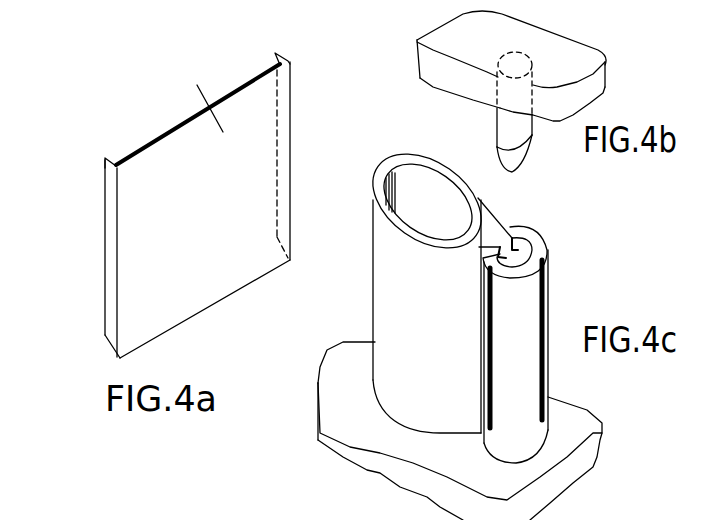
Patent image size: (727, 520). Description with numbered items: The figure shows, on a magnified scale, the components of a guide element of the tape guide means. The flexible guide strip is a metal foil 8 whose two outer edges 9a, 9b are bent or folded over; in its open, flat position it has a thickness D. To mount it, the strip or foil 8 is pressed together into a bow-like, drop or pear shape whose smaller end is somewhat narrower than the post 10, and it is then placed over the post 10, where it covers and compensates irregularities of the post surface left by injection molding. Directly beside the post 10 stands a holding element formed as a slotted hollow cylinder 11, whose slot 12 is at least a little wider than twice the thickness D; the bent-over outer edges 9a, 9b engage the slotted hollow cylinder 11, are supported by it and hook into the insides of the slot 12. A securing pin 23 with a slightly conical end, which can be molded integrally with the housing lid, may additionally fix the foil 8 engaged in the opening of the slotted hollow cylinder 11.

In FIG. 4A, the metal foil 8 is at (207, 290).
In FIG. 4A, the bent-over outer edge 9a is at (107, 170).
In FIG. 4C, the bent-over outer edge 9a is at (501, 262).
In FIG. 4A, the bent-over outer edge 9b is at (276, 53).
In FIG. 4C, the bent-over outer edge 9b is at (522, 240).
In FIG. 4A, the thickness D is at (210, 101).
In FIG. 4B, the securing pin 23 is at (500, 122).
In FIG. 4C, the post 10 is at (387, 173).
In FIG. 4C, the slotted hollow cylinder 11 is at (537, 235).
In FIG. 4C, the slot 12 is at (502, 246).